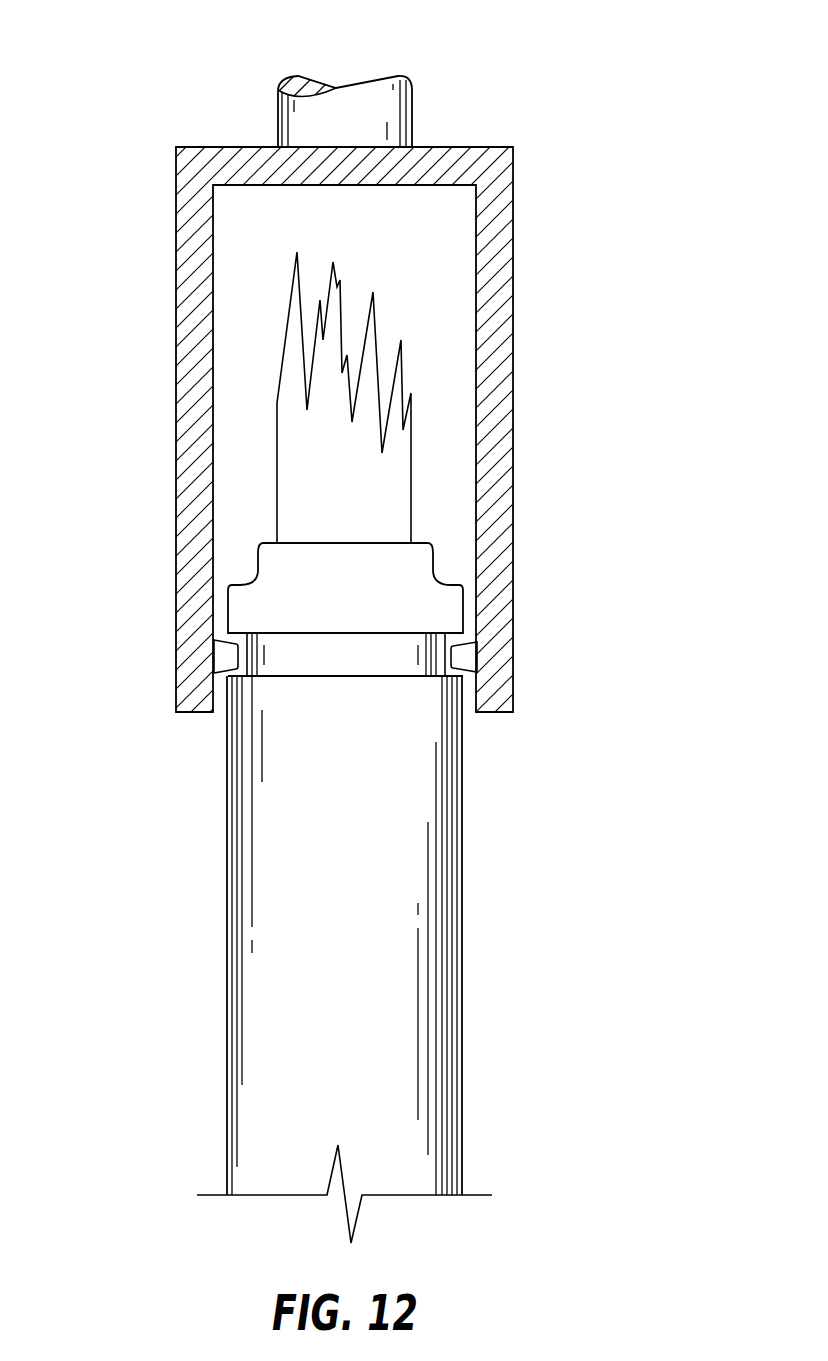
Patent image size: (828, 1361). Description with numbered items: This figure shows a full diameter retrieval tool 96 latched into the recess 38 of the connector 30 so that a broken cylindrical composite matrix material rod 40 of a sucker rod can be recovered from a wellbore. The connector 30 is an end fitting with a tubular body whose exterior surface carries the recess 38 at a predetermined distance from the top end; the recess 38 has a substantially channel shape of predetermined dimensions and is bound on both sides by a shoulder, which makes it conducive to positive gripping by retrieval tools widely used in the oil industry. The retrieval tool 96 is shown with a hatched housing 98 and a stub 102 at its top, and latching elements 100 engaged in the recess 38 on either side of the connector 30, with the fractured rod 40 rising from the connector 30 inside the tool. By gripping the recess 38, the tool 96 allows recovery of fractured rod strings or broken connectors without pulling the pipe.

The full diameter retrieval tool 96 is at (414, 422).
The housing 98 is at (505, 381).
The stub cylinder 102 is at (407, 98).
The cylindrical rod 40 is at (368, 350).
The recess 38 is at (346, 660).
The clip 100 is at (223, 656).
The connector 30 is at (445, 1013).